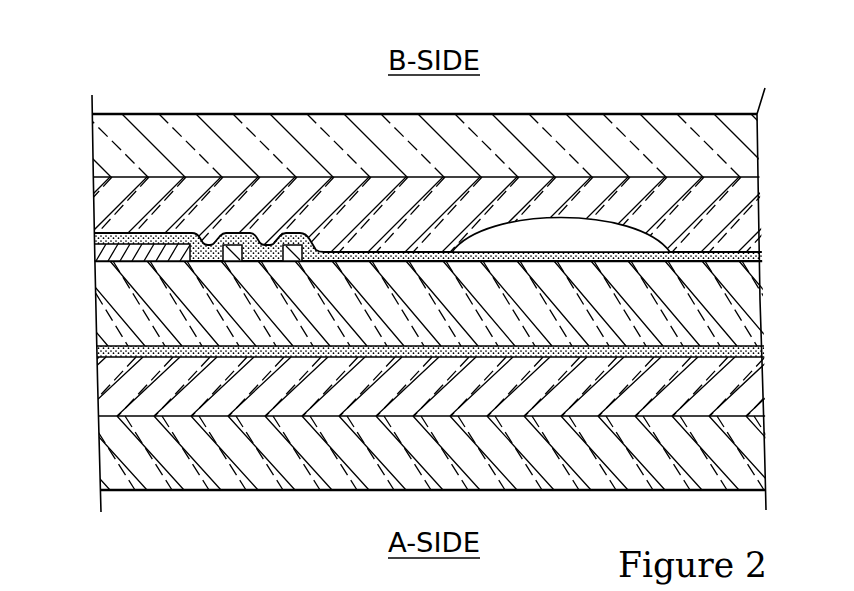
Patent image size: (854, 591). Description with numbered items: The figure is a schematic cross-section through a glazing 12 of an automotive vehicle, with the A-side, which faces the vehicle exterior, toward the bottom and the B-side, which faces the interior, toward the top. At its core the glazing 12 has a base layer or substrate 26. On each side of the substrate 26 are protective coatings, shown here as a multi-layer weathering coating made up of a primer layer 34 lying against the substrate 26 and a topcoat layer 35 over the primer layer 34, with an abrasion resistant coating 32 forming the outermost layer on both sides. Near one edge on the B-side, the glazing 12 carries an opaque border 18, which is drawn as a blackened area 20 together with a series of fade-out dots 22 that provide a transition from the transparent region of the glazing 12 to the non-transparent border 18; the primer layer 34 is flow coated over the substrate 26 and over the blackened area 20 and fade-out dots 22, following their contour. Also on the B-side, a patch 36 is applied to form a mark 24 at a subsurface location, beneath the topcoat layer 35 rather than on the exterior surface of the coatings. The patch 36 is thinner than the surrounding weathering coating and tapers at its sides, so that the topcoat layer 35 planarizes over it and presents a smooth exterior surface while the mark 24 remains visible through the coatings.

The glazing 12 is at (535, 55).
The opaque border 18 is at (223, 222).
The blackened area 20 is at (130, 237).
The fade-out dots 22 is at (258, 240).
The mark 24 is at (578, 218).
The substrate 26 is at (100, 298).
The abrasion resistant coating 32 is at (106, 150).
The primer layer 34 is at (95, 236).
The topcoat layer 35 is at (97, 203).
The patch 36 is at (625, 233).